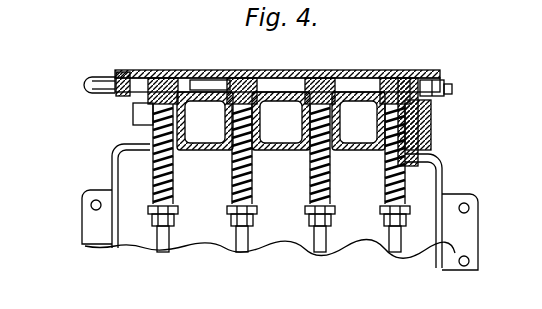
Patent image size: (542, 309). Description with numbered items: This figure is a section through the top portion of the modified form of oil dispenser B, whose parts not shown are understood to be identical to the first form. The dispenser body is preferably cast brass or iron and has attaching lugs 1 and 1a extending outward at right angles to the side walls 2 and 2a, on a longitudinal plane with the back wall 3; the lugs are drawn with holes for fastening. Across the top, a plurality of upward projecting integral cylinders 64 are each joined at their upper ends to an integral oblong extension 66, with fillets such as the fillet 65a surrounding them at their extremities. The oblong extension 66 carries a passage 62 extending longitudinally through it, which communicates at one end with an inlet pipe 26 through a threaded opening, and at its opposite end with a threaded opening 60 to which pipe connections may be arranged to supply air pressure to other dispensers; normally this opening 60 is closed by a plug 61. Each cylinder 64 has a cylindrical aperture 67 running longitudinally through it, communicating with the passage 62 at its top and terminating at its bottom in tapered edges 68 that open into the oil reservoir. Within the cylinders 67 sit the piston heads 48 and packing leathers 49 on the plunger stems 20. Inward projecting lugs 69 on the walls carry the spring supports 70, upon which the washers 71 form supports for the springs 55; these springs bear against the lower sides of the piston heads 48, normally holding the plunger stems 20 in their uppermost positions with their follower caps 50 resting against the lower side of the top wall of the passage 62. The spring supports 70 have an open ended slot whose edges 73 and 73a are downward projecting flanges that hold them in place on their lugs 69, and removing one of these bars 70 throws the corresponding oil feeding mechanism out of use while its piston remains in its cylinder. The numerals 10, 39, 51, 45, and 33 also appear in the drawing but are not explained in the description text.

The rail 10 is at (282, 71).
The plunger stem 20 is at (169, 240).
The inlet pipe 26 is at (90, 82).
The collar 39 is at (136, 71).
The passage 62 is at (205, 78).
The packing leather 49 is at (281, 121).
The piston head 48 is at (358, 121).
The cylindrical aperture 67 is at (363, 132).
The modified form of oil dispenser B is at (270, 180).
The attaching lug 1 is at (82, 223).
The attaching lug 1a is at (478, 232).
The side wall 2 is at (112, 162).
The side wall 2a is at (442, 170).
The follower cap 50 is at (400, 78).
The post 51 is at (412, 78).
The oblong extension 66 is at (358, 78).
The threaded opening 60 is at (436, 80).
The plug 61 is at (452, 86).
The bracket 45 is at (420, 114).
The cylinder 64 is at (432, 128).
The fillet 65a is at (422, 140).
The lug 33 is at (474, 151).
The tapered edge 68 is at (366, 169).
The spring 55 is at (421, 173).
The washer 71 is at (374, 191).
The edge 73 is at (306, 212).
The edge 73a is at (384, 210).
The spring support 70 is at (424, 197).
The lug 69 is at (424, 213).
The back wall 3 is at (532, 239).